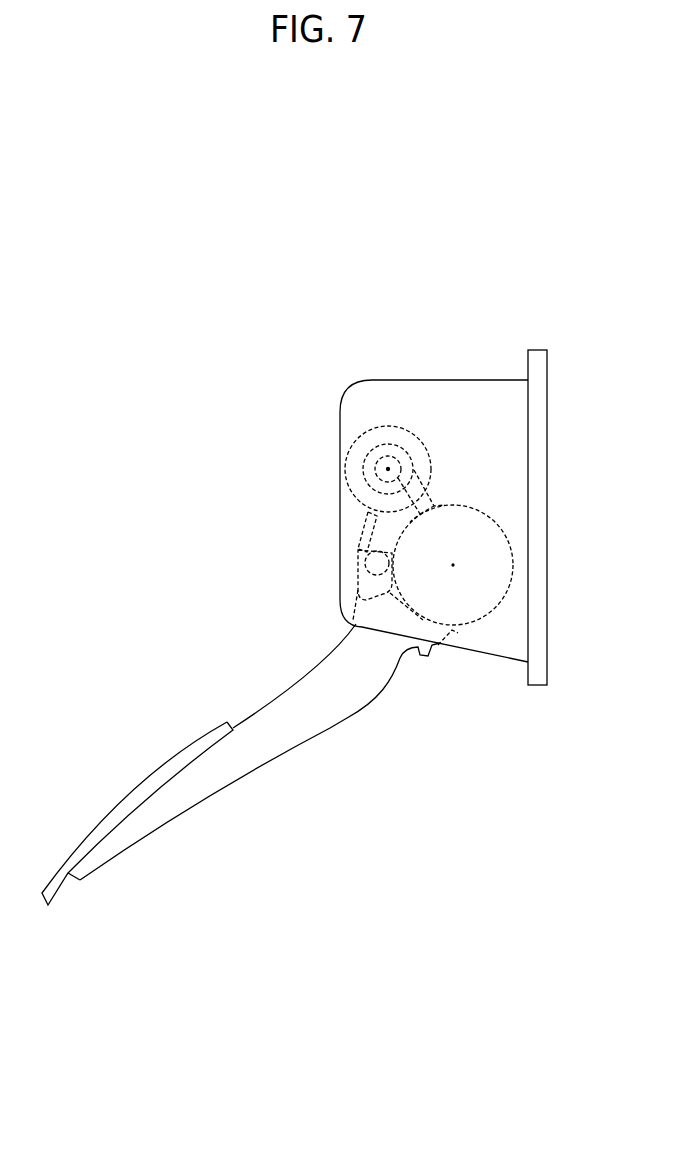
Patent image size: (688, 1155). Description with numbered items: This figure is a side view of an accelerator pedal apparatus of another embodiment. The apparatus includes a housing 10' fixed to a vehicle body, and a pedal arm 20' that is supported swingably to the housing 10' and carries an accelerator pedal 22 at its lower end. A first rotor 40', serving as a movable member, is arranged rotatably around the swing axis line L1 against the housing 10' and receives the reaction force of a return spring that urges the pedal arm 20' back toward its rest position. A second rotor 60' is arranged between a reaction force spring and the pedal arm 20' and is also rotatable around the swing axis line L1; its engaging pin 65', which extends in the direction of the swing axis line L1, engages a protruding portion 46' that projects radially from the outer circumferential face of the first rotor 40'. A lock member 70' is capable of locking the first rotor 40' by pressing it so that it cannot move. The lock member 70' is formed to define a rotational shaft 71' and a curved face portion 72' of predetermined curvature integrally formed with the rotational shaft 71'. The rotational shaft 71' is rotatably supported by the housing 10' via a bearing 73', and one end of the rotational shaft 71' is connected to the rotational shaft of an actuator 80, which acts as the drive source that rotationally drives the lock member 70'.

The housing 10' is at (443, 495).
The pedal arm 20' is at (254, 752).
The accelerator pedal 22 is at (172, 757).
The first rotor 40' is at (453, 610).
The protruding portion 46' is at (330, 523).
The second rotor 60' is at (346, 585).
The engaging pin 65' is at (335, 552).
The lock member 70' is at (388, 422).
The rotational shaft 71' is at (381, 420).
The curved face portion 72' is at (450, 484).
The bearing 73' is at (344, 461).
The actuator 80 is at (359, 422).
The swing axis line L1 is at (452, 567).